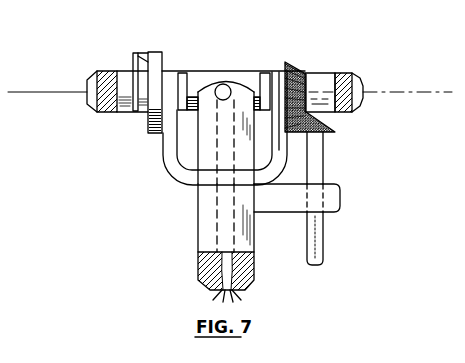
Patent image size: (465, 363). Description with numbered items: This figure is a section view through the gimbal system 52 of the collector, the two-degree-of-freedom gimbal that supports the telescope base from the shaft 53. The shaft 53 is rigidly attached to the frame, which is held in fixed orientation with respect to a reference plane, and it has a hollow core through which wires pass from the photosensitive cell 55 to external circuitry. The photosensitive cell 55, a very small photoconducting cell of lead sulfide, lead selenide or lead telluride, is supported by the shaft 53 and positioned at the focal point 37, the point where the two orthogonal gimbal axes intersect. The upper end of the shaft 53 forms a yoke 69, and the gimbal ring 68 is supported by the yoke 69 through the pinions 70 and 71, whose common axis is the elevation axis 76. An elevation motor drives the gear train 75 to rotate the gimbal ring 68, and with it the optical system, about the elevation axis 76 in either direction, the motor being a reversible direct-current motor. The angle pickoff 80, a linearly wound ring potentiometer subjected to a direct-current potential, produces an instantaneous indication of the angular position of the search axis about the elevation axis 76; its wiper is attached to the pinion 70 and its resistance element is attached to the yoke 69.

The focal point 37 is at (223, 84).
The gimbal system 52 is at (190, 67).
The shaft 53 is at (198, 205).
The photosensitive cell 55 is at (240, 86).
The gimbal ring 68 is at (330, 72).
The yoke 69 is at (167, 145).
The pinion 70 is at (123, 88).
The pinion 71 is at (318, 78).
The gear train 75 is at (344, 129).
The elevation axis 76 is at (397, 90).
The angle pickoff 80 is at (152, 52).